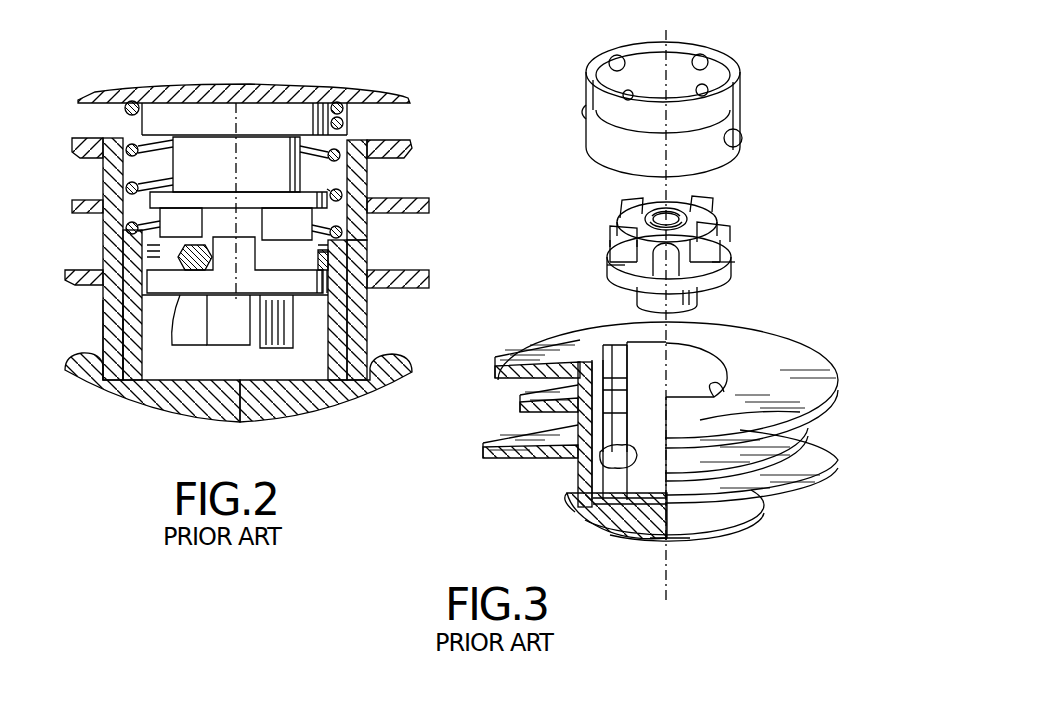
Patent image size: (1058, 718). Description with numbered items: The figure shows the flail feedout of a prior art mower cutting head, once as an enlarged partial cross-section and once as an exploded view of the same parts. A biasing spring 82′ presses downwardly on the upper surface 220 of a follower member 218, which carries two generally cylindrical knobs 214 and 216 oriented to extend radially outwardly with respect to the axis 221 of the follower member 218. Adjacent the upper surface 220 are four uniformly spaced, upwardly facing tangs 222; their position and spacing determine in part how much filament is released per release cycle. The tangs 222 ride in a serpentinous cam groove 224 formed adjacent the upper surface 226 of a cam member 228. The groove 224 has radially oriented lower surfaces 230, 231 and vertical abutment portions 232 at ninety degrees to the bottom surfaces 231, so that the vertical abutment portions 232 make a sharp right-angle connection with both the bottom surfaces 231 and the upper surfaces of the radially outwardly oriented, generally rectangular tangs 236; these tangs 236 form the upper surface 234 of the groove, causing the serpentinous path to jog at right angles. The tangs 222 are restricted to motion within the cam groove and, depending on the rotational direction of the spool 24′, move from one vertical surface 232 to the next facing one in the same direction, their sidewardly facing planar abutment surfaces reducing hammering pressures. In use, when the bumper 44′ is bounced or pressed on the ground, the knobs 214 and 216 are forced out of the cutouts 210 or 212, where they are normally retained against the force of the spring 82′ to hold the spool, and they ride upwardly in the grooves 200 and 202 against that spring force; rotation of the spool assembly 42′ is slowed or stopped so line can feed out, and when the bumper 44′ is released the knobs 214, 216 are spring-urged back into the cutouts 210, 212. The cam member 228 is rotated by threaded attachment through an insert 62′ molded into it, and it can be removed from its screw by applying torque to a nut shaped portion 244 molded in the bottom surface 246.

In FIG. 2, the spring 82′ is at (344, 112).
In FIG. 2, the axis 221 is at (238, 163).
In FIG. 3, the axis 221 is at (725, 345).
In FIG. 2, the upper surface of the cam groove 234 is at (365, 188).
In FIG. 3, the upper surface of the cam groove 234 is at (638, 210).
In FIG. 2, the upper surface of the cam member 226 is at (250, 236).
In FIG. 3, the upper surface of the cam member 226 is at (720, 215).
In FIG. 2, the tangs 222 is at (345, 247).
In FIG. 3, the tangs 222 is at (700, 98).
In FIG. 2, the follower member 218 is at (355, 262).
In FIG. 3, the follower member 218 is at (752, 97).
In FIG. 2, the upper surface of the follower member 220 is at (128, 232).
In FIG. 3, the upper surface of the follower member 220 is at (735, 68).
In FIG. 2, the spool 24′ is at (112, 320).
In FIG. 3, the spool 24′ is at (582, 474).
In FIG. 2, the bottom surfaces 231 is at (171, 297).
In FIG. 3, the bottom surfaces 231 is at (628, 285).
In FIG. 2, the cam groove 224 is at (239, 302).
In FIG. 3, the cam groove 224 is at (602, 272).
In FIG. 2, the cam member 228 is at (203, 300).
In FIG. 3, the cam member 228 is at (594, 222).
In FIG. 2, the nut shaped portion 244 is at (262, 342).
In FIG. 3, the nut shaped portion 244 is at (668, 540).
In FIG. 2, the lower surfaces 230 is at (312, 297).
In FIG. 3, the lower surfaces 230 is at (738, 272).
In FIG. 2, the bottom surface 246 is at (345, 327).
In FIG. 2, the spool assembly 42′ is at (127, 413).
In FIG. 3, the spool assembly 42′ is at (583, 527).
In FIG. 2, the bumper 44′ is at (270, 424).
In FIG. 3, the bumper 44′ is at (718, 535).
In FIG. 3, the knob 214 is at (583, 110).
In FIG. 3, the knob 216 is at (743, 136).
In FIG. 3, the insert 62′ is at (695, 213).
In FIG. 3, the tangs 236 is at (615, 232).
In FIG. 3, the vertical abutment portions 232 is at (700, 285).
In FIG. 3, the groove 200 is at (585, 335).
In FIG. 3, the groove 202 is at (727, 388).
In FIG. 3, the cutout 212 is at (630, 450).
In FIG. 3, the cutout 210 is at (572, 497).